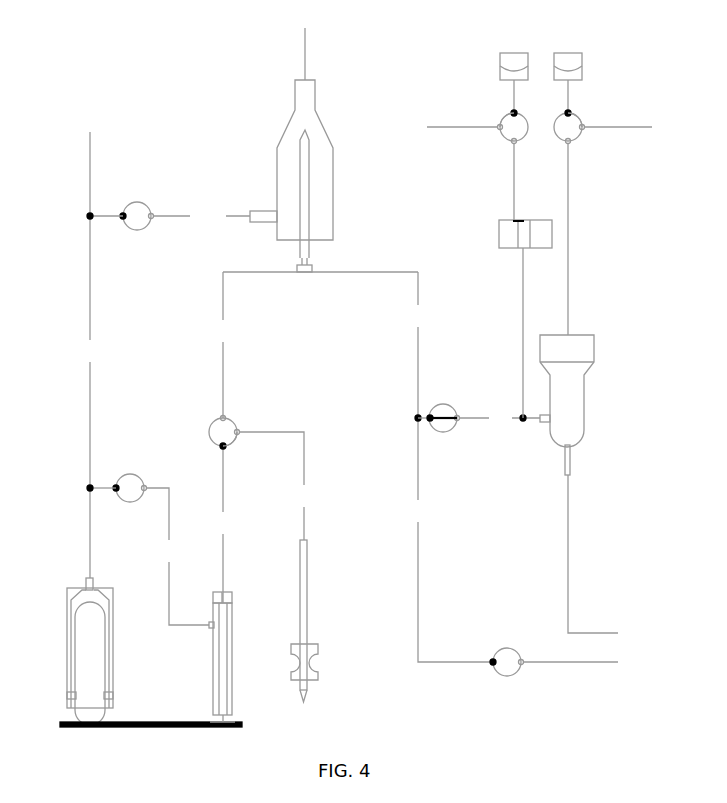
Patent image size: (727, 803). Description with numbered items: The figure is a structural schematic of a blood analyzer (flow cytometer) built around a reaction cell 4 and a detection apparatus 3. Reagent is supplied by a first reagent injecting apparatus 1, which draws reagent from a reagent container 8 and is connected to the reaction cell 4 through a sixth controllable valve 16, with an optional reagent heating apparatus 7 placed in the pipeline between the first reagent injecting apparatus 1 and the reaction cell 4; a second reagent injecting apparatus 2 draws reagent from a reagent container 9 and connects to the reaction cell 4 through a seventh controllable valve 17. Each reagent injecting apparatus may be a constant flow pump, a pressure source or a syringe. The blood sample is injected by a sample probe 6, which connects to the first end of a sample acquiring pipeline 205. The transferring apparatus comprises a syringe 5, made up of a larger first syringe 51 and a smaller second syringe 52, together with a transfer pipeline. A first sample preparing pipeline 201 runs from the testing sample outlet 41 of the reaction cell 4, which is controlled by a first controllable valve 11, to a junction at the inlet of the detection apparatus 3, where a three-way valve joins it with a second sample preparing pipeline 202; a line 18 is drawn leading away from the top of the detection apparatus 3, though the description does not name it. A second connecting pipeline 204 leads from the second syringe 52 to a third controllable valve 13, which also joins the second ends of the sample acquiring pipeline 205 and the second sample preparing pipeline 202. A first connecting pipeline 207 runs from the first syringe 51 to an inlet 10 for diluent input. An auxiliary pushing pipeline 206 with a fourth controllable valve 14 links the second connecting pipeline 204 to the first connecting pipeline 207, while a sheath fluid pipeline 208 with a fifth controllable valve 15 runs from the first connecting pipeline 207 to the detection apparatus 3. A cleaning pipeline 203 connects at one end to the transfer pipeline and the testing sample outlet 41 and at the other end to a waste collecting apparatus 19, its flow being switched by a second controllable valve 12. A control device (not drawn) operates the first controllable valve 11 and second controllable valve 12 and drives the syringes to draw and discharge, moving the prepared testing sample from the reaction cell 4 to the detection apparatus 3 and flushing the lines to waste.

The first reagent injecting apparatus 1 is at (514, 71).
The second reagent injecting apparatus 2 is at (568, 71).
The detection apparatus 3 is at (291, 176).
The reaction cell 4 is at (567, 405).
The syringe 5 is at (151, 712).
The sample probe 6 is at (308, 621).
The reagent heating apparatus 7 is at (525, 280).
The reagent container 8 is at (452, 125).
The reagent container 9 is at (626, 125).
The inlet 10 is at (89, 224).
The first controllable valve 11 is at (439, 408).
The second controllable valve 12 is at (554, 652).
The third controllable valve 13 is at (234, 424).
The fourth controllable valve 14 is at (117, 478).
The fifth controllable valve 15 is at (121, 205).
The sixth controllable valve 16 is at (505, 136).
The seventh controllable valve 17 is at (576, 222).
The outlet line 18 is at (305, 41).
The waste collecting apparatus 19 is at (608, 567).
The testing sample outlet 41 is at (499, 418).
The first syringe 51 is at (66, 651).
The second syringe 52 is at (214, 657).
The first sample preparing pipeline 201 is at (418, 345).
The second sample preparing pipeline 202 is at (312, 345).
The cleaning pipeline 203 is at (447, 538).
The second connecting pipeline 204 is at (228, 519).
The sample acquiring pipeline 205 is at (280, 486).
The auxiliary pushing pipeline 206 is at (177, 556).
The first connecting pipeline 207 is at (90, 459).
The sheath fluid pipeline 208 is at (201, 216).